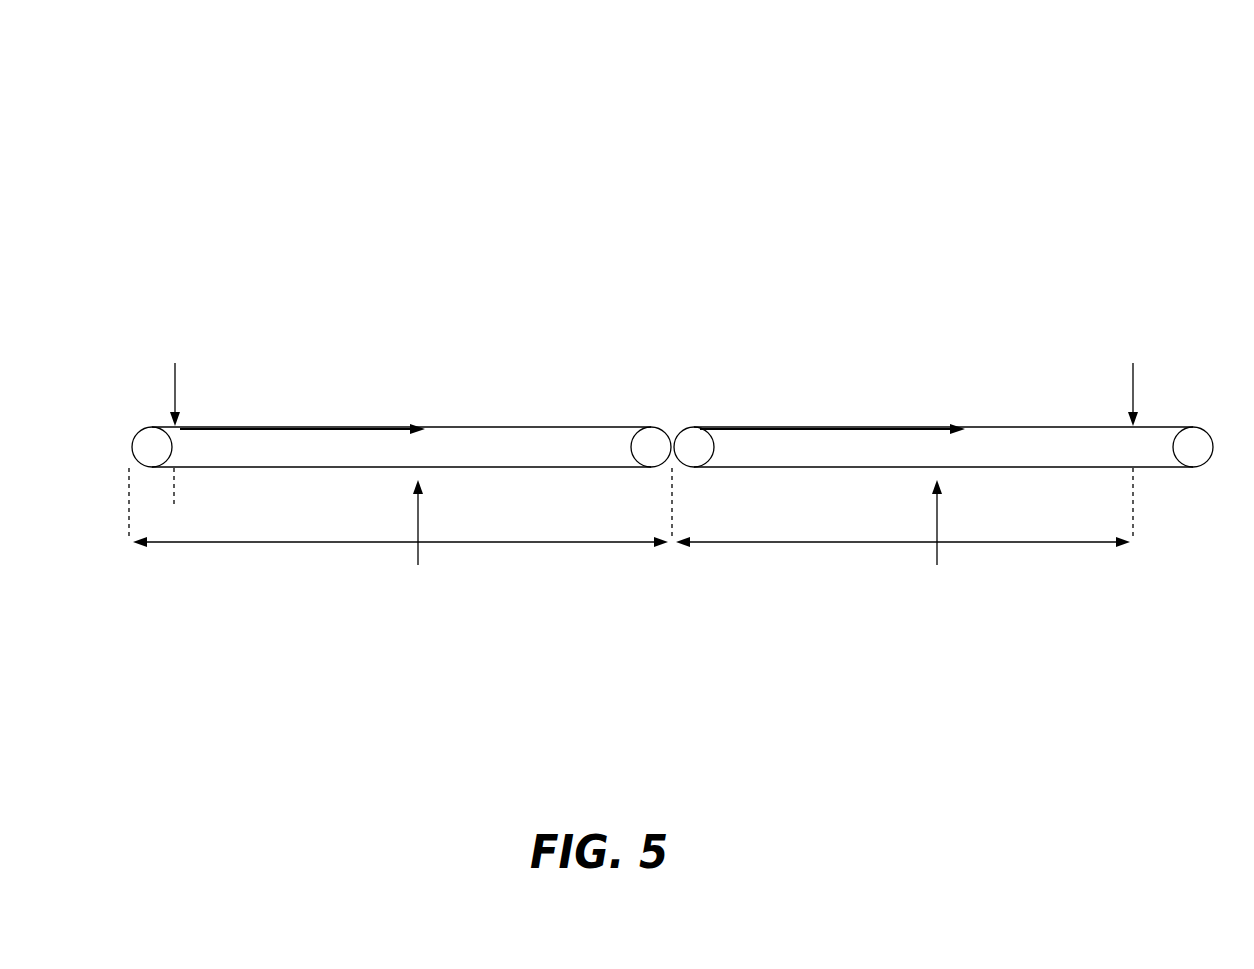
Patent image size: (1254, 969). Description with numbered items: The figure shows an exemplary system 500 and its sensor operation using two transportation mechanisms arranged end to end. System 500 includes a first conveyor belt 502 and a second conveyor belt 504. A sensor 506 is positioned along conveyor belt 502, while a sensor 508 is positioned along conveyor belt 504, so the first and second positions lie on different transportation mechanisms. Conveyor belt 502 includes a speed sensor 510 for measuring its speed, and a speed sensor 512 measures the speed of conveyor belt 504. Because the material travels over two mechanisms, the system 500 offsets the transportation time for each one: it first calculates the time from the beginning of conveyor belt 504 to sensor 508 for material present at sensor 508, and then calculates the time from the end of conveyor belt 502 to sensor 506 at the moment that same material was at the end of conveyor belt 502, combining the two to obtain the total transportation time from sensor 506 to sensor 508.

The system 500 is at (763, 100).
The conveyor belt 502 is at (443, 393).
The conveyor belt 504 is at (845, 402).
The sensor 506 is at (168, 318).
The sensor 508 is at (1130, 318).
The speed sensor 510 is at (433, 530).
The speed sensor 512 is at (955, 530).